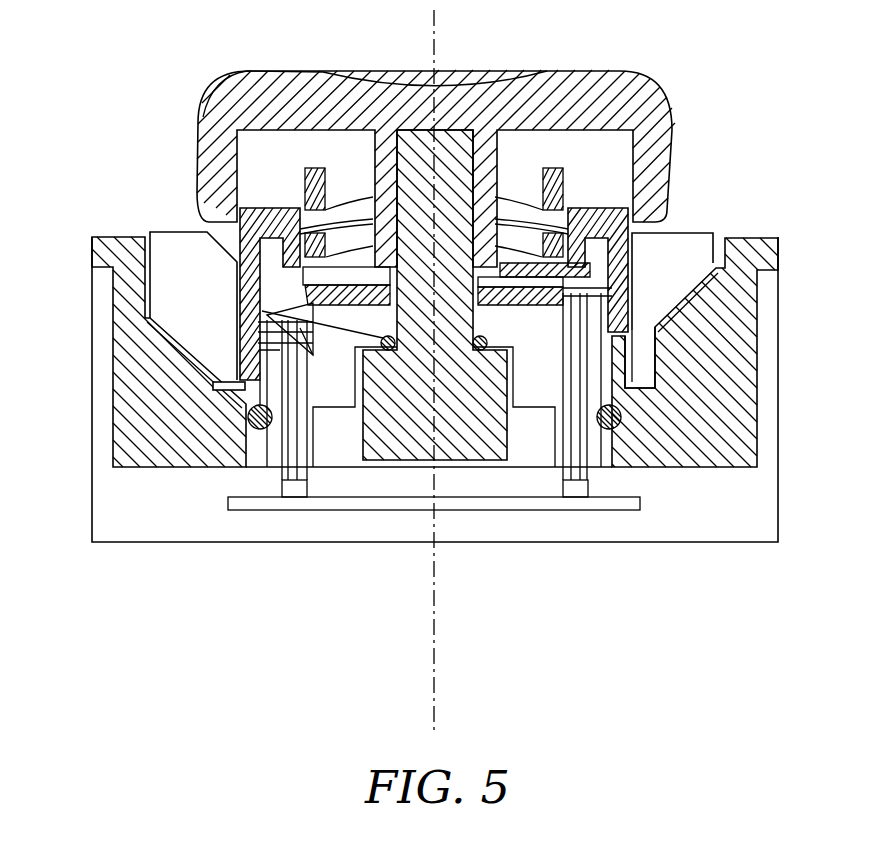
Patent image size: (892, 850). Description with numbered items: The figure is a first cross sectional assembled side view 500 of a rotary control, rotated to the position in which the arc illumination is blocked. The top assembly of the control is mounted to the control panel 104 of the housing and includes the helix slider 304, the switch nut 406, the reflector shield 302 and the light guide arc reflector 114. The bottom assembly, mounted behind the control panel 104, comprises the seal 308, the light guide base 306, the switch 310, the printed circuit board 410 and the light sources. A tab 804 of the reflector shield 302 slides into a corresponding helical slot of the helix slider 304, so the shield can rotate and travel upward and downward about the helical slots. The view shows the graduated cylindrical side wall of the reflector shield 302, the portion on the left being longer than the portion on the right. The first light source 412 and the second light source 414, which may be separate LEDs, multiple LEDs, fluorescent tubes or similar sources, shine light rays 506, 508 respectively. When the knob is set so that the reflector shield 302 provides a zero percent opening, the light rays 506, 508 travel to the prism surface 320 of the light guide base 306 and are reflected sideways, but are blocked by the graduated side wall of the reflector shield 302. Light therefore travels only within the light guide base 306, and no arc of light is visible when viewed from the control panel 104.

The control panel 104 is at (752, 238).
The light guide arc reflector 114 is at (690, 233).
The reflector shield 302 is at (241, 215).
The helix slider 304 is at (553, 290).
The light guide base 306 is at (278, 402).
The seal 308 is at (250, 415).
The switch 310 is at (450, 143).
The prism surface 320 is at (305, 310).
The switch nut 406 is at (300, 306).
The printed circuit board 410 is at (228, 502).
The first light source 412 is at (294, 498).
The second light source 414 is at (574, 498).
The first cross sectional assembled side view 500 is at (766, 717).
The light rays 506 is at (278, 452).
The light rays 508 is at (592, 452).
The tab 804 is at (587, 237).